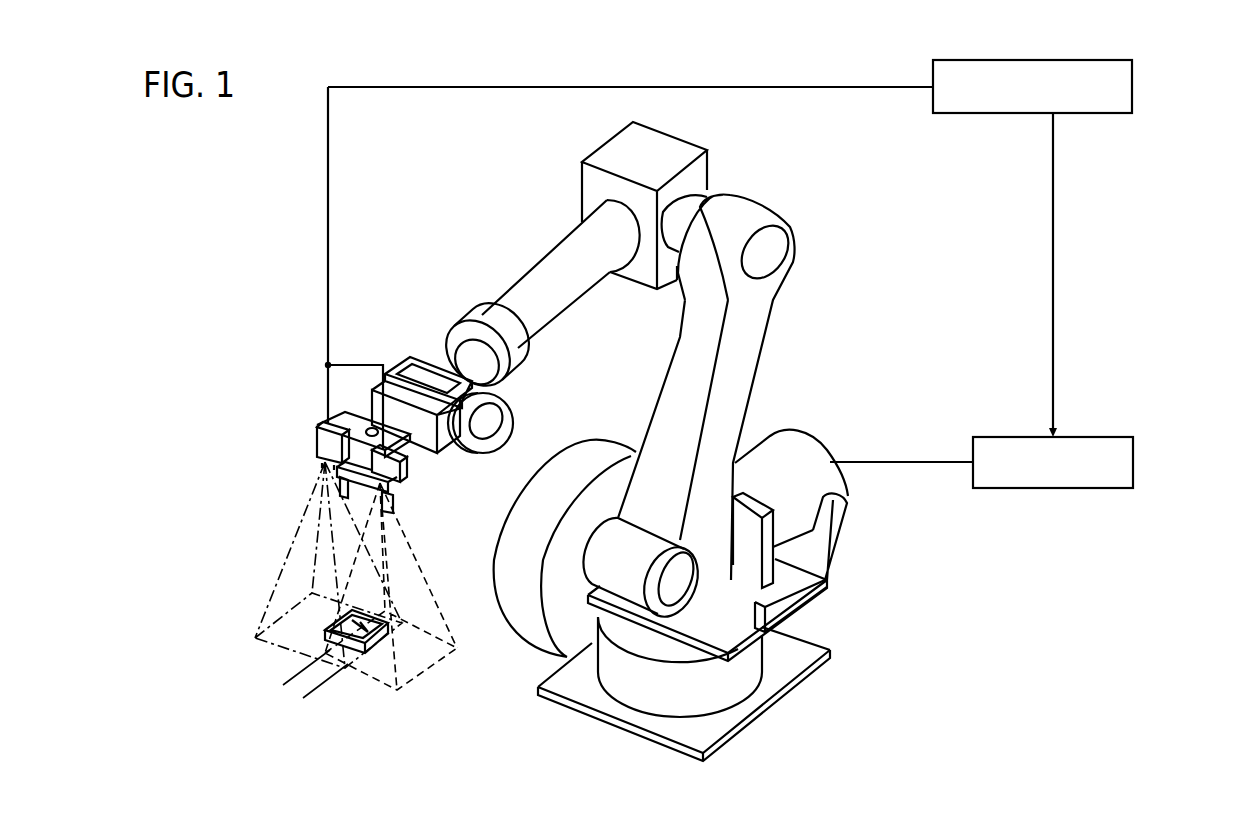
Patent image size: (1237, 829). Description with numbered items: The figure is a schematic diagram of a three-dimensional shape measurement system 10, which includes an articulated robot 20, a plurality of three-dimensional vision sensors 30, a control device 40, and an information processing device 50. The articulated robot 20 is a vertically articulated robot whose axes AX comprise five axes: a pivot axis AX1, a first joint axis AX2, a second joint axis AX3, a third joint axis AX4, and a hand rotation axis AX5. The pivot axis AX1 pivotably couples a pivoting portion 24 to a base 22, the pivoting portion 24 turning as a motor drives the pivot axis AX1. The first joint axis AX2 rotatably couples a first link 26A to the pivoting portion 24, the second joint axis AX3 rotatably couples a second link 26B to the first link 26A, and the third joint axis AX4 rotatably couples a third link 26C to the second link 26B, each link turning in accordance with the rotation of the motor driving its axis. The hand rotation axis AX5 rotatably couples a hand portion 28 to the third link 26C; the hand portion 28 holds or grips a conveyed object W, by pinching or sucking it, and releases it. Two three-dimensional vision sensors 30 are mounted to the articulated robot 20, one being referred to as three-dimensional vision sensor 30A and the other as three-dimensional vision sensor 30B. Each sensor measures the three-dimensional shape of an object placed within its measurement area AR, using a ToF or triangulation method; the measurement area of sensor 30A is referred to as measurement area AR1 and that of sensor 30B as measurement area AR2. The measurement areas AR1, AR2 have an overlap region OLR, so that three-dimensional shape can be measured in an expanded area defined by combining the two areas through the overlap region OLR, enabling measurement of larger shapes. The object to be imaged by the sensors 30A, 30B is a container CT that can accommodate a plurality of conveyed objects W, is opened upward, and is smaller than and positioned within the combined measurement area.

The three-dimensional shape measurement system 10 is at (202, 162).
The articulated robot 20 is at (514, 240).
The base 22 is at (568, 688).
The pivoting portion 24 is at (743, 685).
The first link 26A is at (745, 376).
The second link 26B is at (551, 300).
The third link 26C is at (400, 366).
The hand portion 28 is at (396, 494).
The three-dimensional vision sensor 30 is at (353, 446).
The three-dimensional vision sensor 30A is at (317, 448).
The three-dimensional vision sensor 30B is at (392, 472).
The control device 40 is at (1133, 462).
The information processing device 50 is at (1132, 86).
The axes AX is at (848, 687).
The pivot axis AX1 is at (680, 625).
The first joint axis AX2 is at (578, 543).
The second joint axis AX3 is at (650, 207).
The third joint axis AX4 is at (440, 404).
The hand rotation axis AX5 is at (372, 527).
The measurement area AR is at (246, 600).
The measurement area AR1 is at (277, 646).
The measurement area AR2 is at (421, 678).
The overlap region OLR is at (270, 680).
The container CT is at (373, 648).
The conveyed object W is at (333, 621).